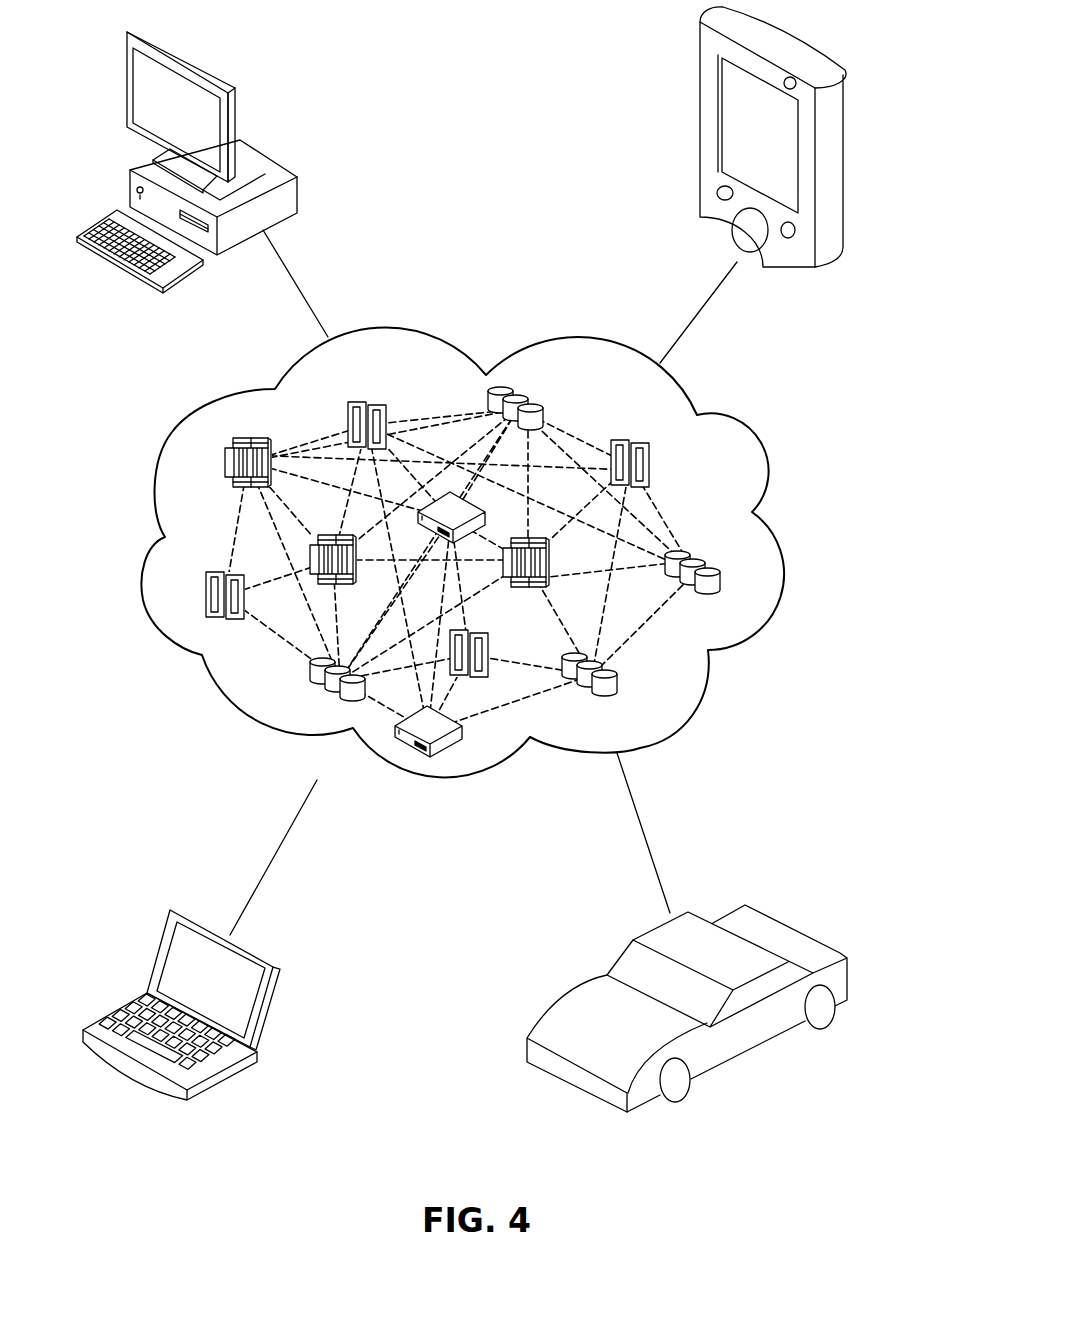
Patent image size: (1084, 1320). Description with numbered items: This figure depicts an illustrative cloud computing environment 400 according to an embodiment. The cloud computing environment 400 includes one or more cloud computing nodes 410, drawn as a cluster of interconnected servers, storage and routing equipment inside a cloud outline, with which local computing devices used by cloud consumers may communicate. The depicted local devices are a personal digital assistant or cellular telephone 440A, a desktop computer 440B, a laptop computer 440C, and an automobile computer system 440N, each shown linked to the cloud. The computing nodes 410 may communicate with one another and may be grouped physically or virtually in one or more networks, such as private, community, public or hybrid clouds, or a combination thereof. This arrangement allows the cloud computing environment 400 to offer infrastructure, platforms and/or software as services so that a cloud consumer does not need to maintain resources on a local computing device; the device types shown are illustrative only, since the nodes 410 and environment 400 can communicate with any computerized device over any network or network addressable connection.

The cloud computing environment 400 is at (753, 628).
The cloud computing nodes 410 is at (700, 488).
The personal digital assistant or cellular telephone 440A is at (700, 85).
The desktop computer 440B is at (297, 188).
The laptop computer 440C is at (278, 978).
The automobile computer system 440N is at (850, 977).